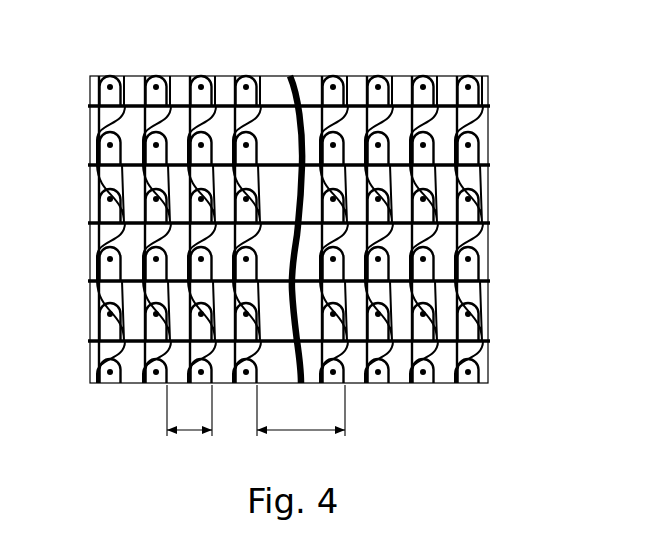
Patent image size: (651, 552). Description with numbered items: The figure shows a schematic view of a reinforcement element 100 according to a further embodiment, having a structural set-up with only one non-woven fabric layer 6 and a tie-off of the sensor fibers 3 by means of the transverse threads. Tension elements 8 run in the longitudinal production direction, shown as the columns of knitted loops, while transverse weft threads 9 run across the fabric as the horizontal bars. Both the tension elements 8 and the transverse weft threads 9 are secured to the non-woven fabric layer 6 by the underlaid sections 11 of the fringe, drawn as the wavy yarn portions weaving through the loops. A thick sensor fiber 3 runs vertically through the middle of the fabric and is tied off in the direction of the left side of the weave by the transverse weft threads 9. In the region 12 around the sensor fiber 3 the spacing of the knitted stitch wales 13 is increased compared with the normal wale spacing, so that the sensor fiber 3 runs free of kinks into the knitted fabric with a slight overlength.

The knitted textile structure 100 is at (67, 40).
The tension elements 8 is at (167, 76).
The sensor fibers 3 is at (292, 77).
The non-woven fabric layer 6 is at (487, 125).
The transverse weft threads 9 is at (487, 281).
The underlaid sections of the fringe 11 is at (478, 216).
The region 12 is at (301, 410).
The knitted stitch wales 13 is at (189, 410).